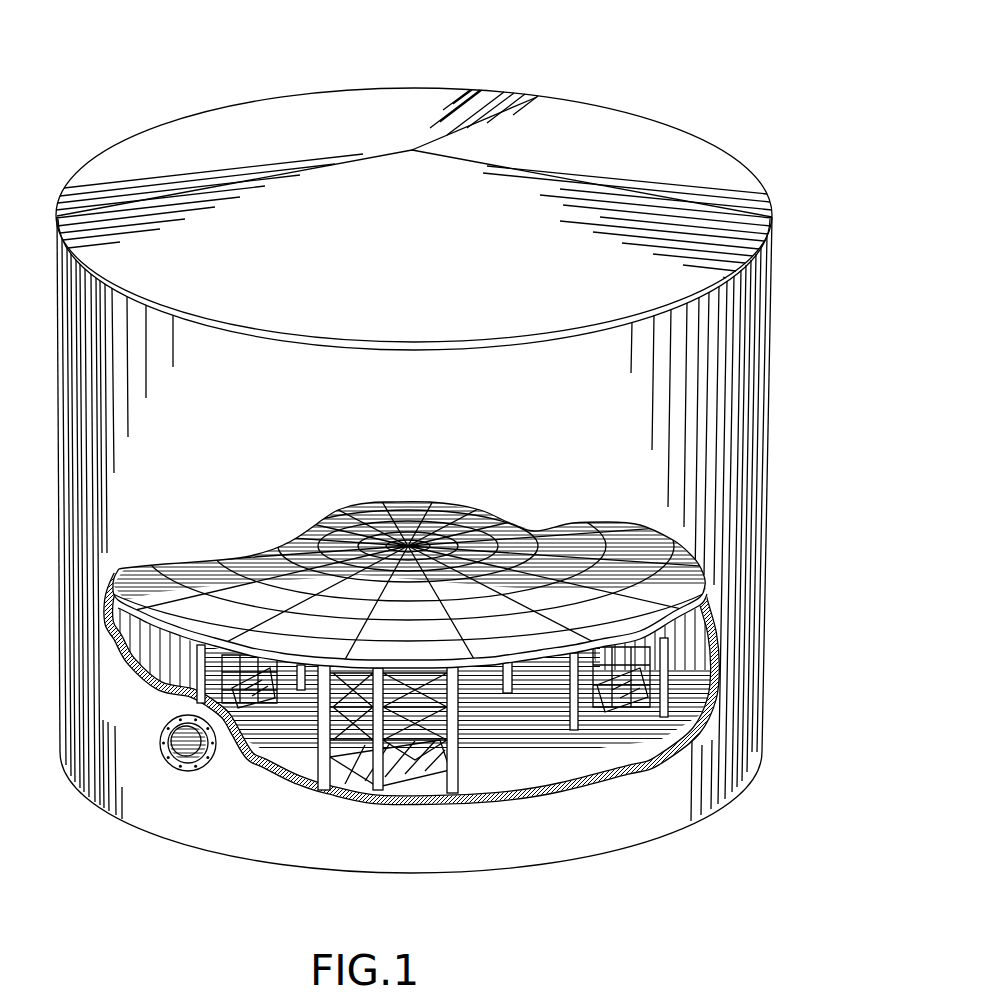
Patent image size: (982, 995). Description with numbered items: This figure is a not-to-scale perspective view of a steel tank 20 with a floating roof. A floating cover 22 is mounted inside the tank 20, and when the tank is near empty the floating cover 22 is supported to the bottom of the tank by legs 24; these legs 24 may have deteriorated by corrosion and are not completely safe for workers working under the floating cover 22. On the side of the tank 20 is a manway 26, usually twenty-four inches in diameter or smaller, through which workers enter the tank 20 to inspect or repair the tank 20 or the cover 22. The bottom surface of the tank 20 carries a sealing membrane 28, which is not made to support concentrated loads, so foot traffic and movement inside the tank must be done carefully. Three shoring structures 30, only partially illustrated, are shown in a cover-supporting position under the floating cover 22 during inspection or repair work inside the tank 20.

The tank 20 is at (613, 110).
The floating cover 22 is at (634, 623).
The legs 24 is at (460, 773).
The manway 26 is at (167, 762).
The sealing membrane 28 is at (578, 770).
The shoring structures 30 is at (657, 680).